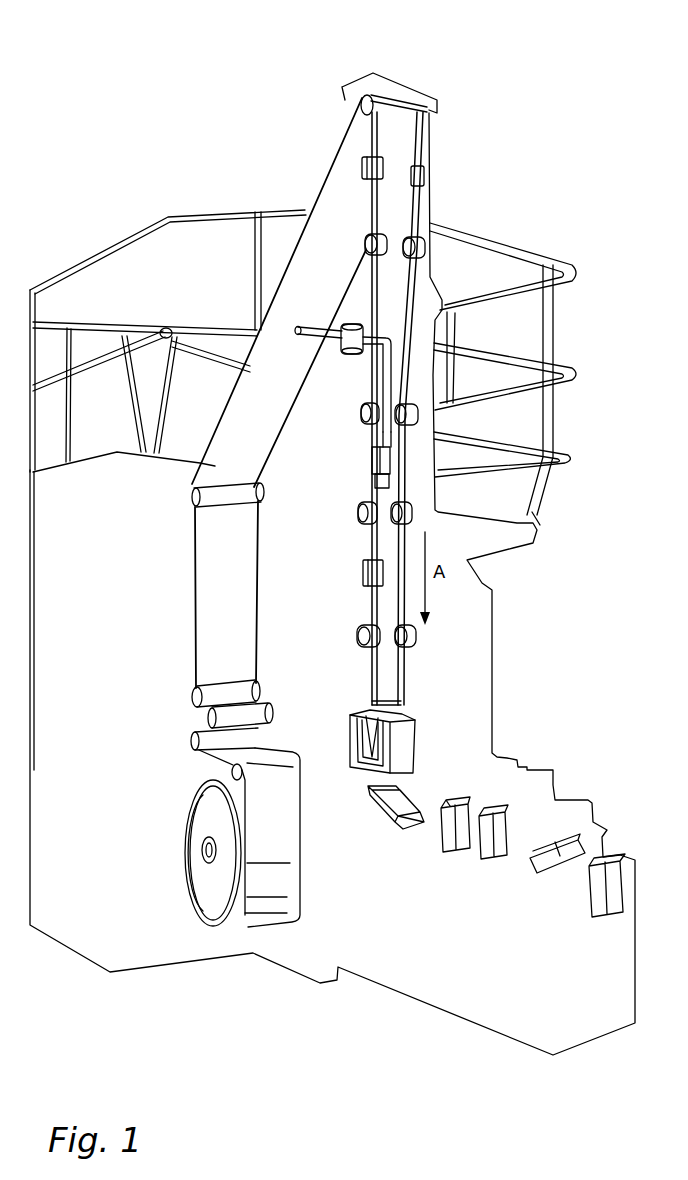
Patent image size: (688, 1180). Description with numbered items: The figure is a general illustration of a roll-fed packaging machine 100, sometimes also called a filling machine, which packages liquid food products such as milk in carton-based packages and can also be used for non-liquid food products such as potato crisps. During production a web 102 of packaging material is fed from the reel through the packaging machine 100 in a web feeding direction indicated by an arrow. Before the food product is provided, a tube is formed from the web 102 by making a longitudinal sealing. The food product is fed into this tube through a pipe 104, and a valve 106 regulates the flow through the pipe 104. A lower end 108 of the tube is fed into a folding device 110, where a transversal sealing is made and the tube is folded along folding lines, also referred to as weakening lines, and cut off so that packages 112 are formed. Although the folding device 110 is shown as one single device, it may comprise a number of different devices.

The packaging machine 100 is at (545, 142).
The web 102 is at (206, 615).
The pipe 104 is at (384, 385).
The valve 106 is at (340, 325).
The lower end 108 is at (390, 681).
The folding device 110 is at (404, 750).
The packages 112 is at (383, 810).